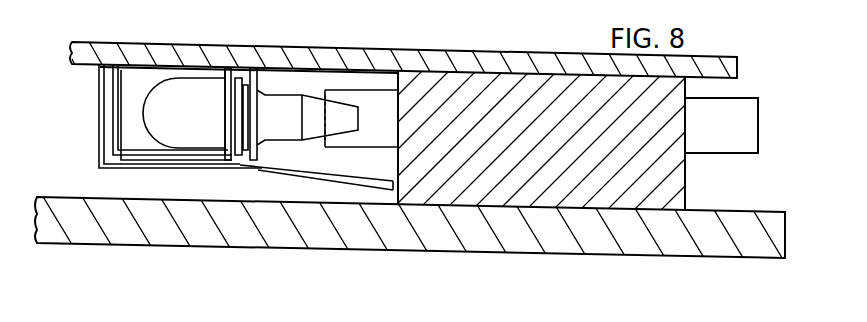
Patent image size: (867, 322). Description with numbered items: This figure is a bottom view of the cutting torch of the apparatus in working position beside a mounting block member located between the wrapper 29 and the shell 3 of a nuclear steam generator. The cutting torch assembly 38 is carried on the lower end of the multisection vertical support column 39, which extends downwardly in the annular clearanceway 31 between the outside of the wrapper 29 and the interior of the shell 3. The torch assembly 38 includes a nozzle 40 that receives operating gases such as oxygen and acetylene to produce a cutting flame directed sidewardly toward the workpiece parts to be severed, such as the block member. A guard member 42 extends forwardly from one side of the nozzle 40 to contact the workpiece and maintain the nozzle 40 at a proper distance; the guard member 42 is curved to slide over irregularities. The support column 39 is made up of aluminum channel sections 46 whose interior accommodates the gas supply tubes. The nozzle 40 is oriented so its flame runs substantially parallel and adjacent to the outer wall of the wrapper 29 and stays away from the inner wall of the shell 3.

The shell 3 is at (413, 217).
The wrapper 29 is at (193, 53).
The annular clearanceway 31 is at (82, 76).
The cutting torch assembly 38 is at (295, 172).
The multisection vertical support column 39 is at (170, 160).
The nozzle 40 is at (283, 103).
The guard member 42 is at (335, 177).
The channel section 46 is at (102, 96).